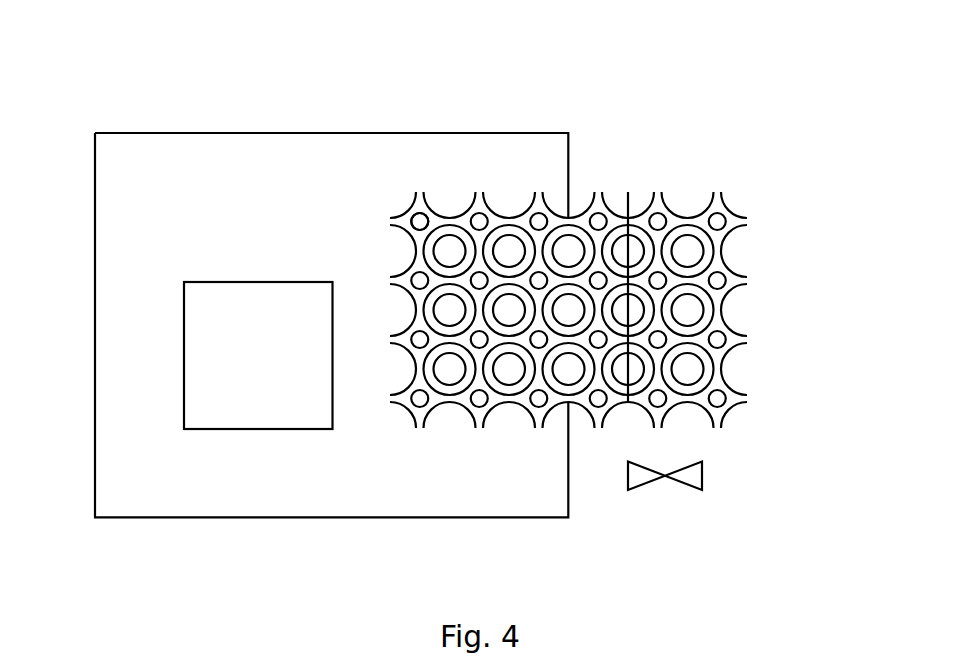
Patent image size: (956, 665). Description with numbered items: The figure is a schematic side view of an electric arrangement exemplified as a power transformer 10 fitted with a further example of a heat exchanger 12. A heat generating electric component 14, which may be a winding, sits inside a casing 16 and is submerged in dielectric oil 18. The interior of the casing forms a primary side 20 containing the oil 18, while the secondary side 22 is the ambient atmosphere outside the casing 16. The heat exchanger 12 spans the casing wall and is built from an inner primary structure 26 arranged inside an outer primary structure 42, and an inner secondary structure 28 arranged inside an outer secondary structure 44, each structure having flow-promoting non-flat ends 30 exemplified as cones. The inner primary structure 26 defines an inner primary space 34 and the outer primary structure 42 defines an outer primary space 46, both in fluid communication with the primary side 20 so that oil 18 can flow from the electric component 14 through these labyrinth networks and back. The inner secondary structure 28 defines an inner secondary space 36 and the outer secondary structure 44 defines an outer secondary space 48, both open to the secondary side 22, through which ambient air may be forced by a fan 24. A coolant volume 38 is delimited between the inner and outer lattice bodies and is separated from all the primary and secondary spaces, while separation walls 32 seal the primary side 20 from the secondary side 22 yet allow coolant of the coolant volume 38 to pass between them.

The power transformer 10 is at (226, 71).
The heat exchanger 12 is at (675, 167).
The electric component 14 is at (272, 372).
The casing 16 is at (93, 182).
The dielectric oil 18 is at (394, 500).
The primary side 20 is at (539, 176).
The secondary side 22 is at (923, 292).
The fan 24 is at (686, 475).
The inner primary structure 26 is at (413, 213).
The inner secondary structure 28 is at (741, 217).
The flow-promoting non-flat ends 30 is at (598, 192).
The separation walls 32 is at (623, 403).
The inner primary space 34 is at (421, 221).
The inner secondary space 36 is at (718, 215).
The coolant volume 38 is at (432, 315).
The outer primary structure 42 is at (433, 255).
The outer secondary structure 44 is at (707, 253).
The outer primary space 46 is at (450, 370).
The outer secondary space 48 is at (690, 370).